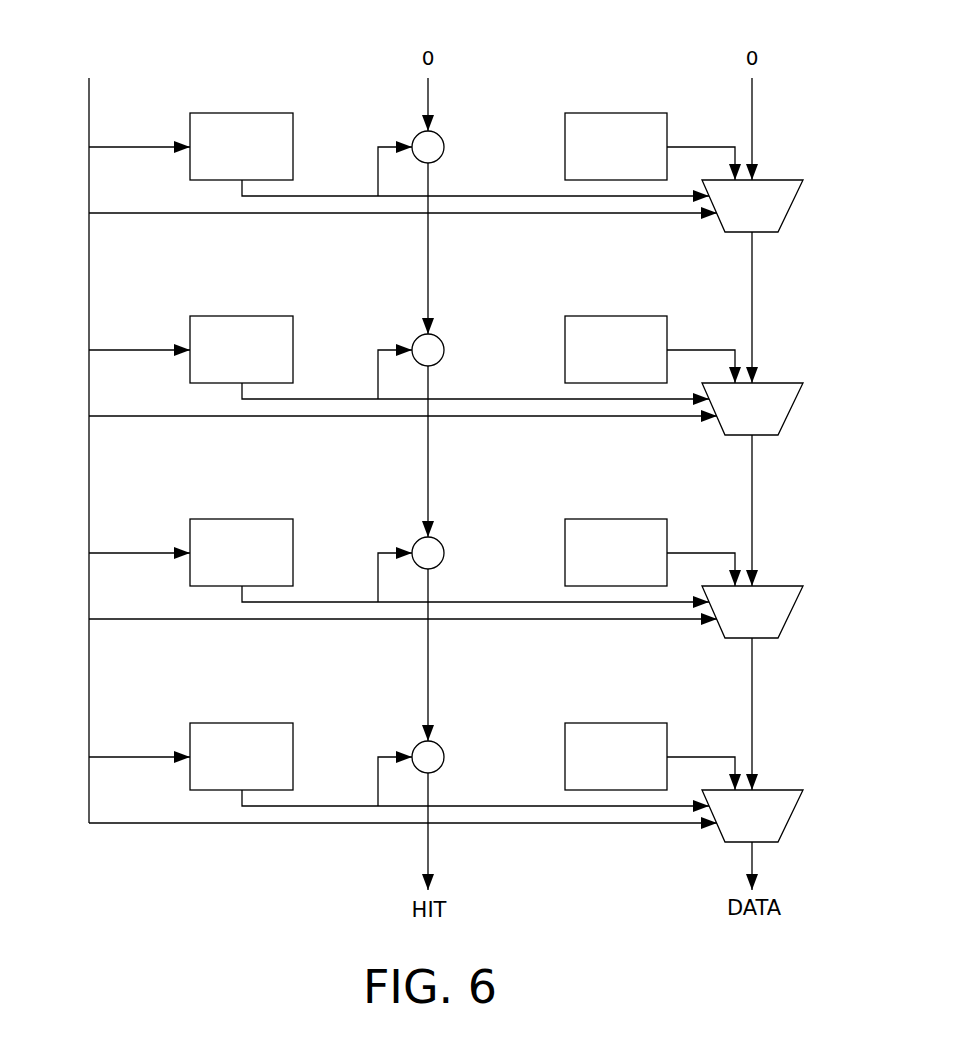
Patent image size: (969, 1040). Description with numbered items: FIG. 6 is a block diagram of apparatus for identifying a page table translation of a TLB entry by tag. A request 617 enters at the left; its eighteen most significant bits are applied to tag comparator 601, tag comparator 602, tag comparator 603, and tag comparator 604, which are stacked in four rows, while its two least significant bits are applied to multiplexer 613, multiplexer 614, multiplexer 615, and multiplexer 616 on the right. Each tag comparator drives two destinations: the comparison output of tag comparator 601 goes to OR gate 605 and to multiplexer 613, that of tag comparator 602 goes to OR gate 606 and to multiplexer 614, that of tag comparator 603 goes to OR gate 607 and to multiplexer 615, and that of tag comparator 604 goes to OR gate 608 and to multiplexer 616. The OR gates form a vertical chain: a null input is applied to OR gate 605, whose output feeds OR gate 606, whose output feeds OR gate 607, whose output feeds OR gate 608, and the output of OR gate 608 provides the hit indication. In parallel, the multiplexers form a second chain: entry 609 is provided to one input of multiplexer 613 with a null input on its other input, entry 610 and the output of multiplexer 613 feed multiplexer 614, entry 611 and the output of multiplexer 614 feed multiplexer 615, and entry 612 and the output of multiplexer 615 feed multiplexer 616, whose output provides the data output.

The tag comparator 601 is at (263, 113).
The tag comparator 602 is at (258, 316).
The tag comparator 603 is at (262, 519).
The tag comparator 604 is at (258, 723).
The OR gate 605 is at (443, 137).
The OR gate 606 is at (443, 340).
The OR gate 607 is at (445, 543).
The OR gate 608 is at (443, 748).
The entry 609 is at (632, 112).
The entry 610 is at (633, 316).
The entry 611 is at (637, 519).
The entry 612 is at (638, 723).
The multiplexer 613 is at (775, 180).
The multiplexer 614 is at (778, 384).
The multiplexer 615 is at (778, 587).
The multiplexer 616 is at (778, 790).
The request 617 is at (89, 121).